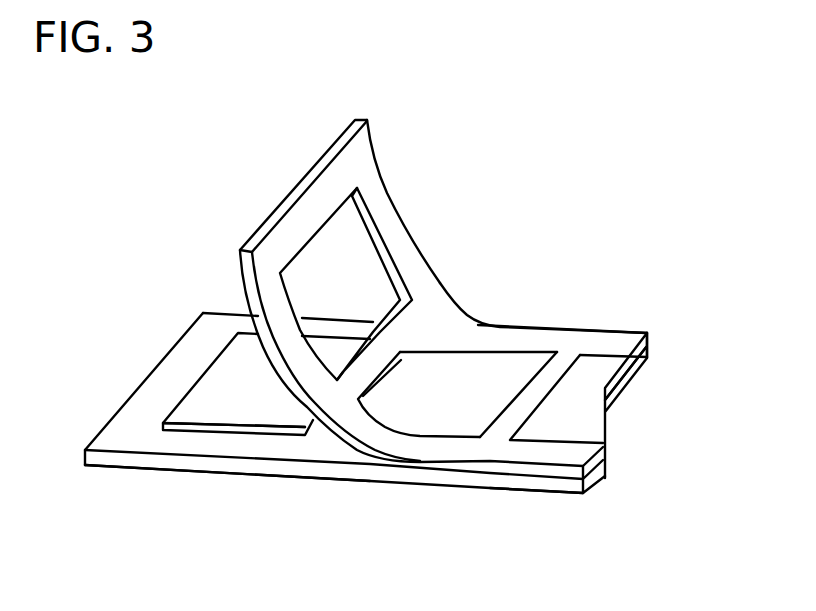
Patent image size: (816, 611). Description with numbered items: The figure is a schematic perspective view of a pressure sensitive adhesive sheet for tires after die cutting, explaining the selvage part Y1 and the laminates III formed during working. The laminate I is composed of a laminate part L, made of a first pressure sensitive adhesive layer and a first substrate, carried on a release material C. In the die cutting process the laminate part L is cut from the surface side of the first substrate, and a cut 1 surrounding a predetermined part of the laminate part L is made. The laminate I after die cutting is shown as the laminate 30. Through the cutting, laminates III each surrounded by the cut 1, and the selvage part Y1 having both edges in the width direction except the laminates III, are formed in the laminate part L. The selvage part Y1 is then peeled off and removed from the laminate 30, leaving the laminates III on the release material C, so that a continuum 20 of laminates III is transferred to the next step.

The continuum of laminates 20 is at (110, 373).
The laminate (I) after die cutting 30 is at (449, 277).
The cut 1 is at (467, 318).
The selvage part Y1 is at (378, 160).
The laminate I is at (662, 331).
The release material C is at (138, 460).
The laminate III is at (233, 408).
The laminate part L is at (492, 468).